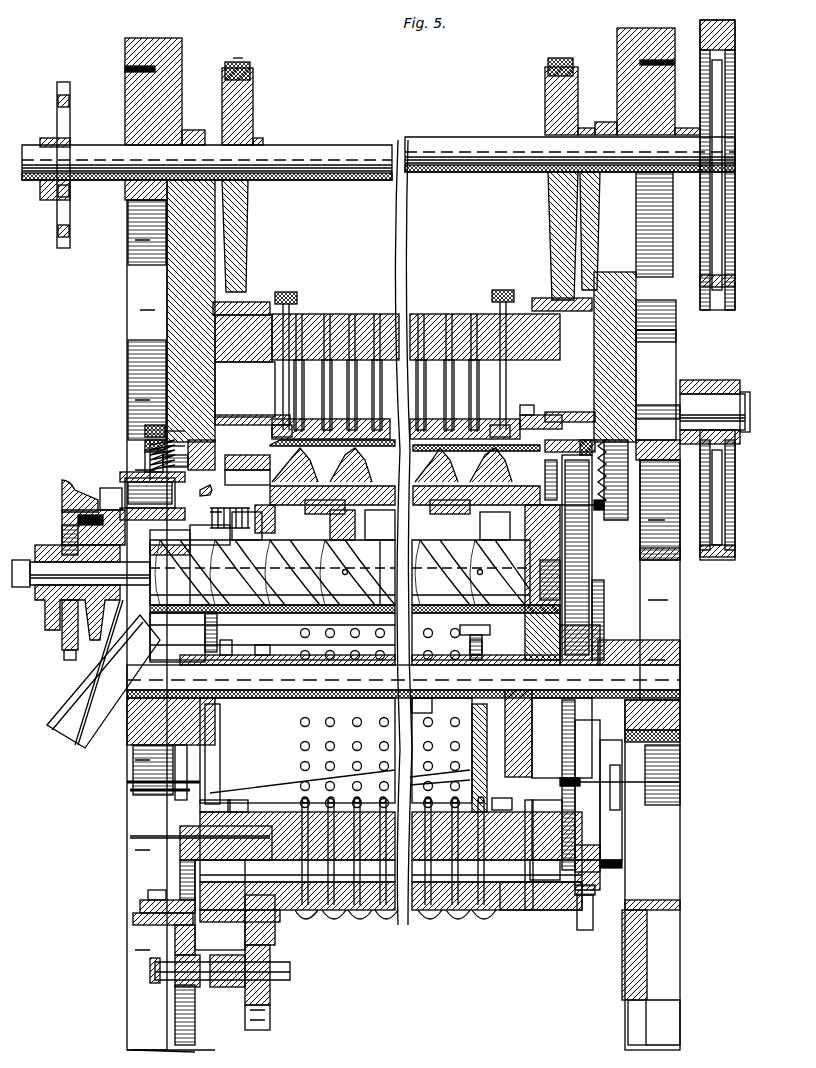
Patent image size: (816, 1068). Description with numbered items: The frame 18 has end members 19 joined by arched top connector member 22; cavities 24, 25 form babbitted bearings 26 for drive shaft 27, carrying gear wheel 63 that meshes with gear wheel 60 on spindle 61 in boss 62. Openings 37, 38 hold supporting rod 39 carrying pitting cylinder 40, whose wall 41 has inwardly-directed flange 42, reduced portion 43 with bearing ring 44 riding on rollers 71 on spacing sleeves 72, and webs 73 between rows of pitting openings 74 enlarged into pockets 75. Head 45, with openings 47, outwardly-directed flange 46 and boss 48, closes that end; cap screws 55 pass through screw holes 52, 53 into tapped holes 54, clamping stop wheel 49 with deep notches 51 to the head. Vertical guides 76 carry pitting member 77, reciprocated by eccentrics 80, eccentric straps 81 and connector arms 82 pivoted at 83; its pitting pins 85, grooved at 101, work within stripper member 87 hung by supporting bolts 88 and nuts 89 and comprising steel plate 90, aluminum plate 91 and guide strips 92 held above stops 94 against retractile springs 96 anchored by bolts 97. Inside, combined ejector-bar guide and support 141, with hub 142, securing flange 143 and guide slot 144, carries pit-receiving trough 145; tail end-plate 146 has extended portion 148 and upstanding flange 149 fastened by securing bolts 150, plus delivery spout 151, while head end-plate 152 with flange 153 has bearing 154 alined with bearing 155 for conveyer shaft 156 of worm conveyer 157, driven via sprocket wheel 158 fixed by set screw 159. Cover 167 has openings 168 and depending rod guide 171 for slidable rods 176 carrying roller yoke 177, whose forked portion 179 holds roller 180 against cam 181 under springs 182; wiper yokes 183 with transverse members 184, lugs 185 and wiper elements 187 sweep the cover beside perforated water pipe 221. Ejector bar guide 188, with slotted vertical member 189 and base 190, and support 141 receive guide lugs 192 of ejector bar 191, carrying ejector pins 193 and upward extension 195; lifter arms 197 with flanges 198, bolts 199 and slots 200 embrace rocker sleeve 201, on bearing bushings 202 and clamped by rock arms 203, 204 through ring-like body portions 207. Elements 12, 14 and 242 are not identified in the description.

The frame 12 is at (127, 794).
The shaft 14 is at (62, 494).
The frame 18 is at (140, 366).
The end members 19 is at (140, 292).
The arched top connector member 22 is at (130, 45).
The semicylindrical cavities 24 is at (128, 212).
The corresponding cavities 25 is at (135, 142).
The babbitt 26 is at (162, 200).
The drive shaft 27 is at (328, 181).
The alined opening 37 is at (660, 705).
The alined opening 38 is at (152, 712).
The supporting rod 39 is at (403, 681).
The pitting cylinder 40 is at (292, 922).
The cylindrical wall 41 is at (515, 915).
The inwardly-directed flange 42 is at (540, 885).
The reduced portion 43 is at (245, 906).
The bearing ring 44 is at (245, 919).
The head 45 is at (590, 850).
The outwardly-directed flange 46 is at (590, 866).
The openings 47 is at (585, 798).
The boss 48 is at (630, 648).
The stop wheel 49 is at (592, 886).
The deep notches 51 is at (590, 910).
The screw holes 52 is at (604, 490).
The screw holes 53 is at (562, 495).
The tapped holes 54 is at (570, 440).
The cap screws 55 is at (602, 620).
The gear wheel 60 is at (735, 482).
The spindle 61 is at (748, 410).
The boss 62 is at (660, 450).
The gear wheel 63 is at (735, 228).
The rollers 71 is at (270, 1012).
The spacing sleeves 72 is at (218, 990).
The peripheral webs 73 is at (356, 916).
The pitting openings 74 is at (310, 515).
The cherry-receiving pockets 75 is at (396, 440).
The vertical guides 76 is at (256, 398).
The pitting member 77 is at (466, 318).
The eccentrics 80 is at (254, 107).
The eccentric straps 81 is at (246, 66).
The connector arms 82 is at (246, 235).
The pivotal connection 83 is at (262, 302).
The pitting pins 85 is at (385, 318).
The stripper member 87 is at (518, 415).
The supporting bolts 88 is at (290, 372).
The nuts 89 is at (298, 302).
The flat plate 90 is at (460, 430).
The aluminum plate 91 is at (362, 430).
The guide strips 92 is at (248, 416).
The stops 94 is at (220, 446).
The retractile springs 96 is at (660, 482).
The bolts 97 is at (660, 506).
The grooves 101 is at (594, 376).
The combined ejector-bar guide and support 141 is at (582, 757).
The hub 142 is at (539, 734).
The securing flange 143 is at (546, 630).
The guide slot 144 is at (551, 830).
The pit-receiving trough 145 is at (262, 630).
The tail end-plate 146 is at (120, 476).
The inwardly-extended portion 148 is at (122, 508).
The upstanding flange 149 is at (145, 431).
The securing bolts 150 is at (145, 446).
The delivery spout 151 is at (80, 688).
The head end-plate 152 is at (525, 540).
The outstanding flange 153 is at (554, 580).
The bearing 154 is at (592, 566).
The bearing 155 is at (110, 604).
The conveyer shaft 156 is at (45, 585).
The worm conveyer 157 is at (222, 612).
The sprocket wheel 158 is at (62, 640).
The set screw 159 is at (62, 537).
The cover 167 is at (245, 462).
The openings 168 is at (250, 535).
The rod guide 171 is at (210, 536).
The slidable rods 176 is at (272, 572).
The roller yoke 177 is at (185, 528).
The longitudinal portion 179 is at (150, 493).
The roller 180 is at (62, 490).
The cam 181 is at (78, 522).
The spiral springs 182 is at (235, 526).
The wiper yokes 183 is at (345, 520).
The transverse member 184 is at (380, 520).
The depending perforated lugs 185 is at (471, 572).
The wiper element 187 is at (356, 572).
The ejector bar guide 188 is at (200, 880).
The slotted vertical member 189 is at (180, 856).
The base 190 is at (140, 908).
The ejector bar 191 is at (391, 869).
The guide lug 192 is at (135, 836).
The ejector pins 193 is at (400, 925).
The upward extension 195 is at (391, 829).
The lifter arms 197 is at (220, 752).
The flange 198 is at (272, 790).
The bolts 199 is at (238, 800).
The upwardly-opening slot 200 is at (226, 660).
The rocker sleeve 201 is at (280, 700).
The bearing bushings 202 is at (200, 665).
The rock arm 203 is at (445, 698).
The rock arm 204 is at (262, 660).
The ring-like body portion 207 is at (200, 742).
The perforated water pipe 221 is at (250, 490).
The rod 242 is at (368, 775).